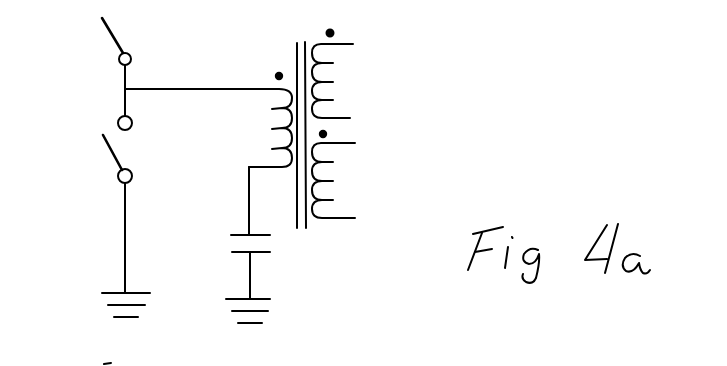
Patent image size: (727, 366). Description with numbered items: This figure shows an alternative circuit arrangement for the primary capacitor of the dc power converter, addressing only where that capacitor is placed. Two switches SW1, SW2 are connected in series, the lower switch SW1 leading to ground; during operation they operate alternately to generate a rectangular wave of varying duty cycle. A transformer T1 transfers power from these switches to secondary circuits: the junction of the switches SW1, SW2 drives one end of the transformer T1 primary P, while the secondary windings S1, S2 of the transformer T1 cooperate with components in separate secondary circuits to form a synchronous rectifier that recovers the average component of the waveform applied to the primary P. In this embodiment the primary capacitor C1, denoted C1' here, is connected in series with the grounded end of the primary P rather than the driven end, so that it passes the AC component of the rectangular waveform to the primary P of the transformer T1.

The switch SW1 is at (28, 160).
The switch SW2 is at (102, 56).
The transformer T1 is at (283, 17).
The primary P is at (249, 134).
The secondary winding S1 is at (357, 67).
The secondary winding S2 is at (373, 194).
The primary capacitor C1 is at (309, 251).